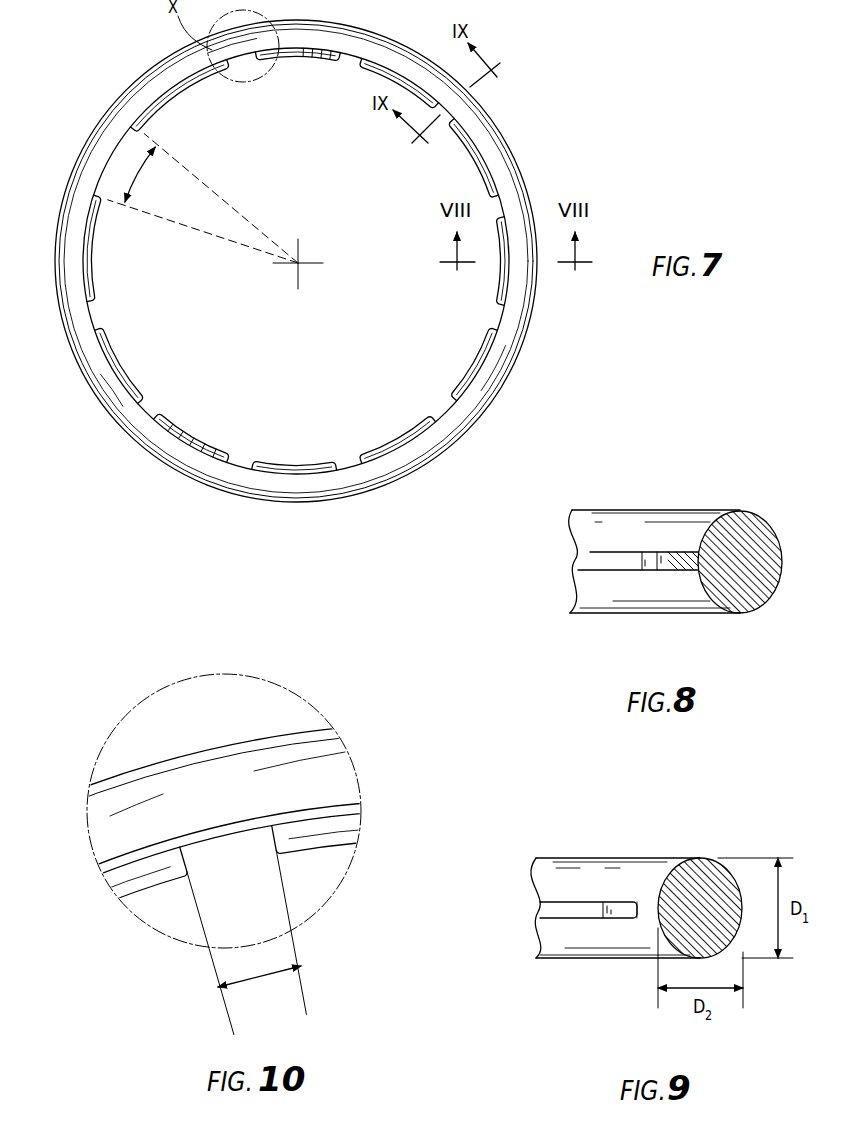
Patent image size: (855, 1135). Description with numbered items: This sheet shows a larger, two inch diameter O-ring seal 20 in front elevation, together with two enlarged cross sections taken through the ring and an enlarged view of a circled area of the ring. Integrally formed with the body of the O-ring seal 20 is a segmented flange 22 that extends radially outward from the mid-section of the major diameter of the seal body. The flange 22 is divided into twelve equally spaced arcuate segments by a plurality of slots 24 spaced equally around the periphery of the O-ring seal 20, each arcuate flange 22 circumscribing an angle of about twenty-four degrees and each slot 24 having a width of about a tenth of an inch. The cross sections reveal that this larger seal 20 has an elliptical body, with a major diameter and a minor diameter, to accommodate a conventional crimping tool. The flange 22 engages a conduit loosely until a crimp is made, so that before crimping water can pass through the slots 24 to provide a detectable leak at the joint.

In FIG. 7, the O-ring seal 20 is at (506, 138).
In FIG. 8, the O-ring seal 20 is at (705, 508).
In FIG. 9, the O-ring seal 20 is at (666, 856).
In FIG. 10, the O-ring seal 20 is at (248, 733).
In FIG. 7, the segmented flange 22 is at (152, 120).
In FIG. 8, the segmented flange 22 is at (683, 574).
In FIG. 9, the segmented flange 22 is at (580, 920).
In FIG. 10, the segmented flange 22 is at (314, 870).
In FIG. 7, the slots 24 is at (100, 200).
In FIG. 9, the slots 24 is at (647, 913).
In FIG. 10, the slots 24 is at (226, 877).